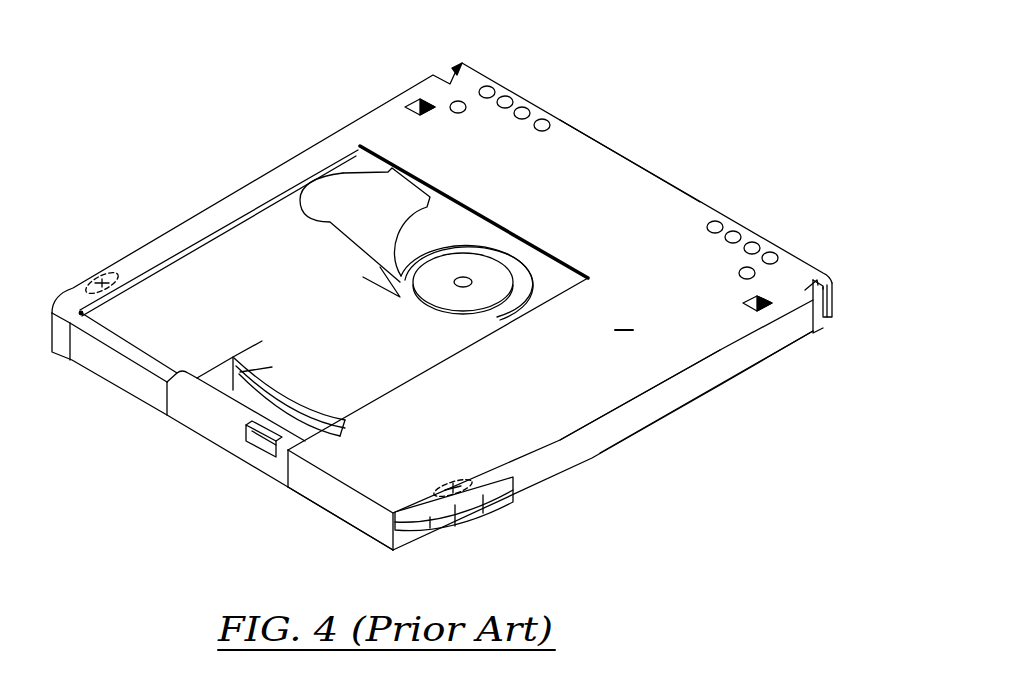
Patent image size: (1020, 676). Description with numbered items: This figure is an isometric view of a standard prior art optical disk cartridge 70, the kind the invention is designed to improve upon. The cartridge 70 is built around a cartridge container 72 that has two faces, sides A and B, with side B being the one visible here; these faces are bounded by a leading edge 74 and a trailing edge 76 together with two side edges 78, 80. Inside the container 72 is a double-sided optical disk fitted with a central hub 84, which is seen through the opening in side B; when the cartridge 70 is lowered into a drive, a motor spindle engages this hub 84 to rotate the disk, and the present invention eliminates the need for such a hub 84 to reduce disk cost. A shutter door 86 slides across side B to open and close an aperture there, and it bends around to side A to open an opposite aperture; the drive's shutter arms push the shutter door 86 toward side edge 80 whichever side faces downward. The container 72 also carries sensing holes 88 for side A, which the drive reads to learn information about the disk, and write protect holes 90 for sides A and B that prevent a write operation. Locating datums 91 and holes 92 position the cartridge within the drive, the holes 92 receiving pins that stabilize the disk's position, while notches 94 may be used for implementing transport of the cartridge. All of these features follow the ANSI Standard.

The prior art cartridge 70 is at (277, 96).
The cartridge container 72 is at (695, 400).
The leading edge 74 is at (347, 511).
The trailing edge 76 is at (603, 143).
The side edge 78 is at (618, 423).
The side edge 80 is at (275, 168).
The hub 84 is at (480, 300).
The shutter door 86 is at (508, 100).
The sensing holes 88 is at (762, 247).
The write protect holes 90 is at (459, 101).
The locating datums 91 is at (103, 262).
The holes 92 is at (420, 98).
The notches 94 is at (447, 75).